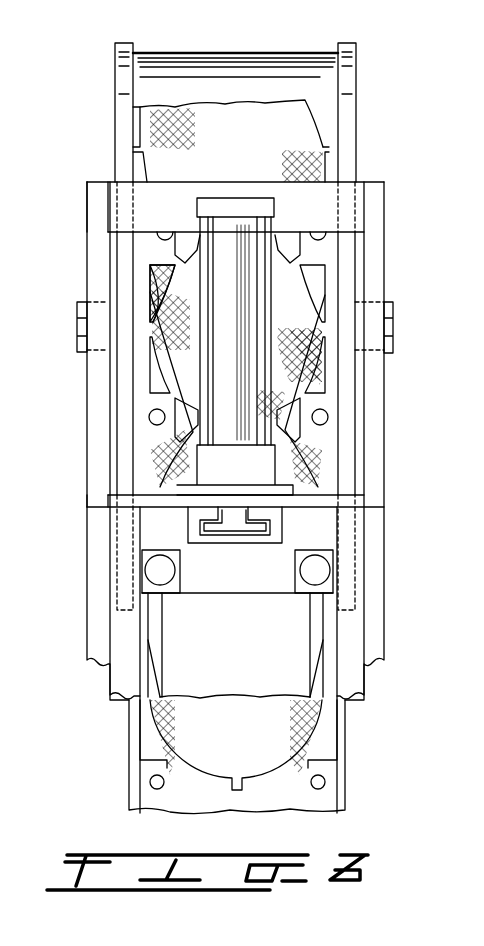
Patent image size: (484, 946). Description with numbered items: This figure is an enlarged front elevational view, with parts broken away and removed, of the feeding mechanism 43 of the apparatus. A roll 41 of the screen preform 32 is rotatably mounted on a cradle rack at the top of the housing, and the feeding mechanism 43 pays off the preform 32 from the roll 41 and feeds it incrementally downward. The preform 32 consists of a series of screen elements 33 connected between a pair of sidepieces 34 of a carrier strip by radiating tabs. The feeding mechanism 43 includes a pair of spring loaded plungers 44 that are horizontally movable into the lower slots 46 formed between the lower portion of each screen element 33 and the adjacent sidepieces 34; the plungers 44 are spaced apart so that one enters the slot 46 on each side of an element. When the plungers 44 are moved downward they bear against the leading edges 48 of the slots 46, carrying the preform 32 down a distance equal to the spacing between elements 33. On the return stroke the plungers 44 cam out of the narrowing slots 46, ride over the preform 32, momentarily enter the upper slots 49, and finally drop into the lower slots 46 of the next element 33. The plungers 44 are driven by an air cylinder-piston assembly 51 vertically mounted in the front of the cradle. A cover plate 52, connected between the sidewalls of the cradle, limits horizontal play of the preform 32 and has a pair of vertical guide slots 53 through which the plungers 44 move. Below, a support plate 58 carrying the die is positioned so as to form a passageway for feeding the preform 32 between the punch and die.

The screen preform 32 is at (331, 150).
The screen element 33 is at (307, 315).
The sidepiece 34 is at (138, 340).
The roll 41 is at (347, 77).
The feeding mechanism 43 is at (385, 500).
The spring loaded plunger 44 is at (157, 572).
The lower slot 46 is at (148, 377).
The leading edge 48 is at (143, 390).
The upper slot 49 is at (153, 282).
The air cylinder-piston assembly 51 is at (240, 260).
The cover plate 52 is at (298, 630).
The guide slot 53 is at (155, 625).
The support plate 58 is at (335, 802).